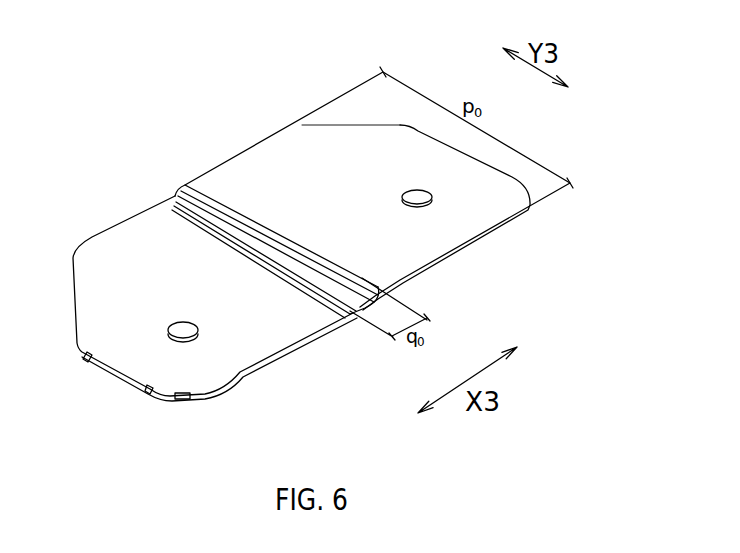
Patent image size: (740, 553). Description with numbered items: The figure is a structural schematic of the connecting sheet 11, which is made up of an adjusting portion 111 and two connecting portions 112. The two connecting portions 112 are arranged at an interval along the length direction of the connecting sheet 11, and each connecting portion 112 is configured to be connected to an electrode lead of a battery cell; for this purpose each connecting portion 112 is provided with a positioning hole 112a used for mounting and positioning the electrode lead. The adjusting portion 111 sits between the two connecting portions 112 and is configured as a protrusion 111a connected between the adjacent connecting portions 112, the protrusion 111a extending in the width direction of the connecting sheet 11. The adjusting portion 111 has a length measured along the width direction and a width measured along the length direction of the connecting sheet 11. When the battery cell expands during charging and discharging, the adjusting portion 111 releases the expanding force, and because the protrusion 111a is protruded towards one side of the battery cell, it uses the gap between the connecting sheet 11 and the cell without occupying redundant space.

The connecting sheet 11 is at (203, 100).
The adjusting portion 111 is at (176, 195).
The protrusion 111a is at (372, 300).
The connecting portion 112 is at (257, 157).
The positioning hole 112a is at (185, 331).